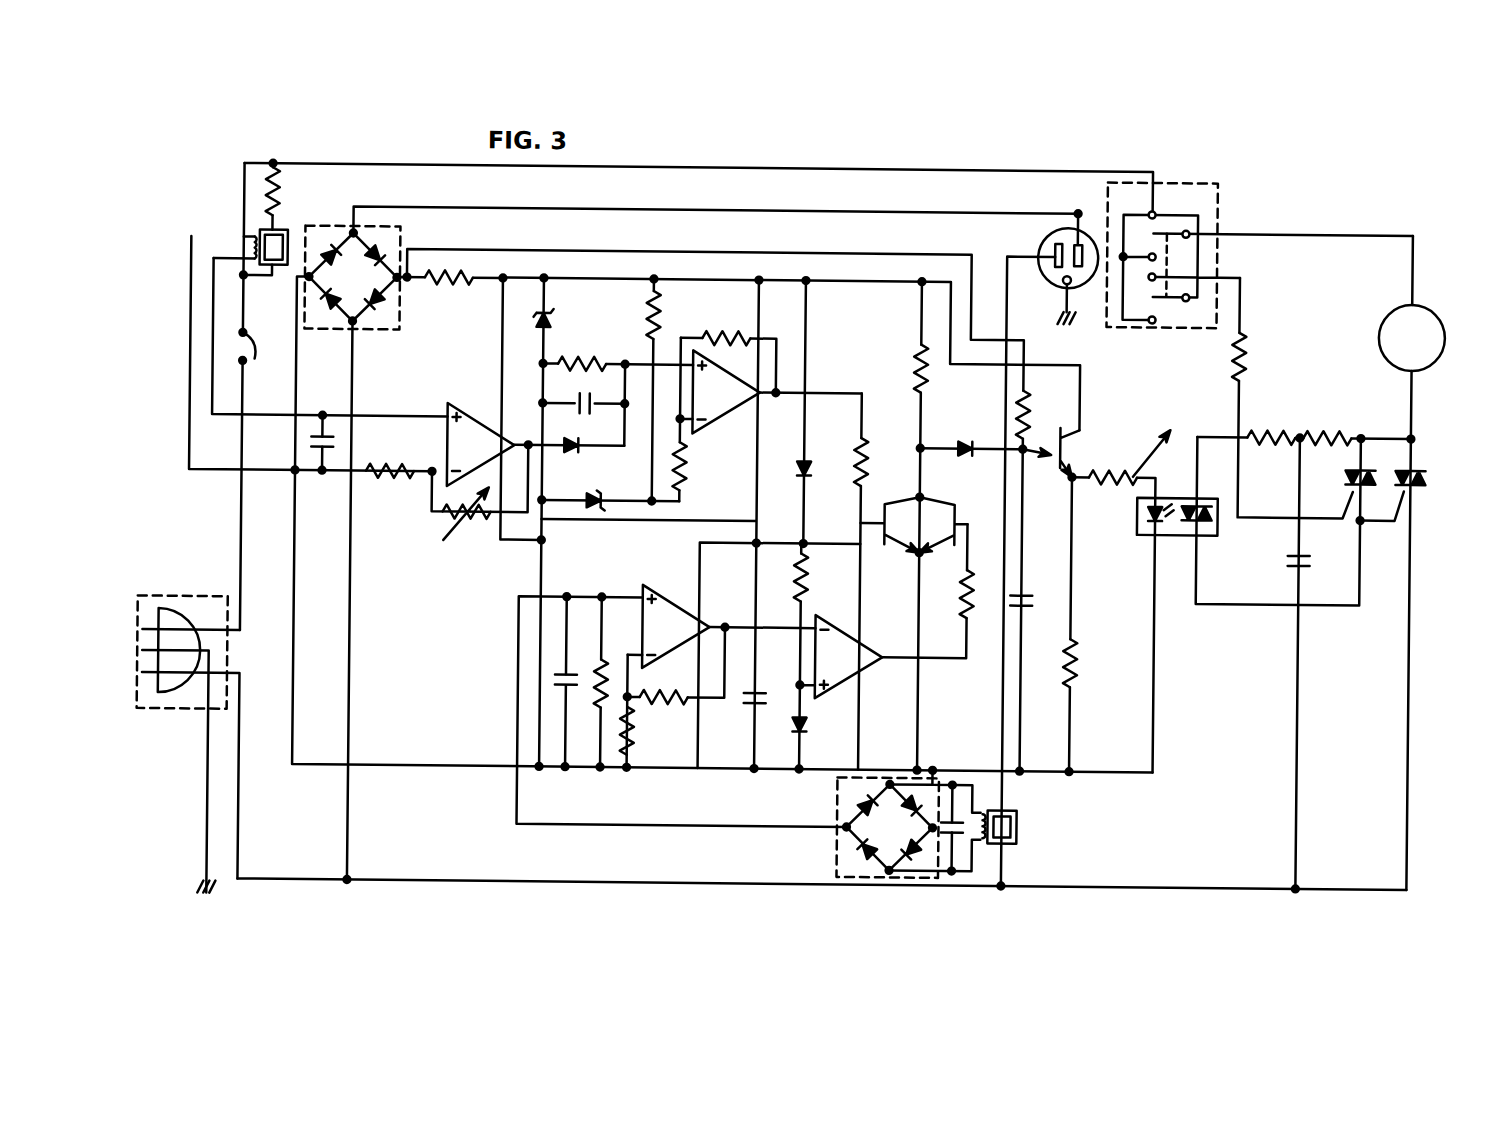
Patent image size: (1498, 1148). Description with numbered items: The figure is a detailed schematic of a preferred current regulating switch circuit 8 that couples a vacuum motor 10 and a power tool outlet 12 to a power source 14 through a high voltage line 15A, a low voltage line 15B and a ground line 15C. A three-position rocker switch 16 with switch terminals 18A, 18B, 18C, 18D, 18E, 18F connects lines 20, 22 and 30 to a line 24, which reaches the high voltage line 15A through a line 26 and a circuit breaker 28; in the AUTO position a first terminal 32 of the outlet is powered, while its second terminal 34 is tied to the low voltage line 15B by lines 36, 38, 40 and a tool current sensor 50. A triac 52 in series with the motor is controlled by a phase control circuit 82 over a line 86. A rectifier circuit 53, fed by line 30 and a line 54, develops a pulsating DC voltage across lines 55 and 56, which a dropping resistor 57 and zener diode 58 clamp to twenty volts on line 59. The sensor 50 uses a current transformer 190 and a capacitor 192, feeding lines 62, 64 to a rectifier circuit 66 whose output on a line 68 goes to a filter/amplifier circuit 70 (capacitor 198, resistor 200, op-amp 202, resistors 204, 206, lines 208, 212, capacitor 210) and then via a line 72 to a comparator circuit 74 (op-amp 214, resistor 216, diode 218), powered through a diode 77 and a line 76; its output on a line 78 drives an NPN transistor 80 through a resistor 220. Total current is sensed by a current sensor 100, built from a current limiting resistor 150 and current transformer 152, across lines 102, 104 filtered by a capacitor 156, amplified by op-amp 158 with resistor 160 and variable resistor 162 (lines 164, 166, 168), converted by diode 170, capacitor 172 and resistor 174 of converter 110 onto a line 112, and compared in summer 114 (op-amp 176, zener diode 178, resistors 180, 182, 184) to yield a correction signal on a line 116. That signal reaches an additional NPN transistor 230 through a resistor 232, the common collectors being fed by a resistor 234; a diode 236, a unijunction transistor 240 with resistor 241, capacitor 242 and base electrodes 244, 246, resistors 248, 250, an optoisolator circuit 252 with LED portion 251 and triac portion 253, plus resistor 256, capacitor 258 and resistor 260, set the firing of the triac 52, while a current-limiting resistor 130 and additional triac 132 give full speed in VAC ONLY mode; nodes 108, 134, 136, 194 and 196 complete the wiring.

The current regulating switch circuit 8 is at (854, 163).
The vacuum motor 10 is at (1377, 325).
The power tool outlet 12 is at (1054, 281).
The power source 14 is at (175, 594).
The high voltage line 15A is at (200, 632).
The low voltage line 15B is at (207, 675).
The ground line 15C is at (213, 655).
The three-position rocker switch 16 is at (1189, 180).
The first switch terminal 18A is at (1146, 208).
The second switch terminal 18B is at (1186, 229).
The third switch terminal 18C is at (1153, 253).
The fourth switch terminal 18D is at (1146, 278).
The fifth switch terminal 18E is at (1185, 298).
The sixth switch terminal 18F is at (1150, 321).
The line 20 is at (1308, 229).
The line 22 is at (1240, 284).
The line 24 is at (716, 168).
The line 26 is at (240, 180).
The circuit breaker 28 is at (252, 356).
The line 30 is at (802, 210).
The first terminal of the power tool outlet 32 is at (1082, 247).
The second terminal of the power tool outlet 34 is at (1048, 244).
The line 36 is at (665, 887).
The line 38 is at (1006, 867).
The line 40 is at (1000, 710).
The tool current sensor 50 is at (1024, 834).
The triac 52 is at (1426, 481).
The rectifier circuit 53 is at (356, 226).
The line 54 is at (352, 584).
The line 55 is at (508, 252).
The line 56 is at (414, 768).
The dropping resistor 57 is at (439, 287).
The zener diode 58 is at (538, 313).
The line 59 is at (575, 280).
The line 62 is at (946, 781).
The line 64 is at (945, 881).
The rectifier circuit 66 is at (833, 805).
The line 68 is at (618, 827).
The filter/amplifier circuit 70 is at (512, 617).
The line 72 is at (727, 626).
The comparator circuit 74 is at (865, 625).
The line 76 is at (806, 497).
The diode 77 is at (795, 471).
The line 78 is at (893, 661).
The NPN transistor 80 is at (959, 512).
The phase control circuit 82 is at (1120, 615).
The line 86 is at (1240, 600).
The current sensor 100 is at (234, 223).
The line 102 is at (188, 285).
The line 104 is at (188, 336).
The line 108 is at (540, 396).
The AC-to-DC converter 110 is at (583, 352).
The line 112 is at (665, 361).
The summer 114 is at (764, 400).
The line 116 is at (830, 391).
The current-limiting resistor 130 is at (1247, 338).
The additional triac 132 is at (1347, 473).
The line 134 is at (1364, 455).
The gate line 136 is at (1363, 523).
The current limiting resistor 150 is at (275, 196).
The current transformer 152 is at (286, 235).
The capacitor 156 is at (323, 419).
The op-amp 158 is at (441, 446).
The resistor 160 is at (393, 482).
The variable resistor 162 is at (452, 534).
The line 164 is at (499, 311).
The line 166 is at (541, 568).
The line 168 is at (544, 563).
The diode 170 is at (573, 456).
The capacitor 172 is at (586, 411).
The resistor 174 is at (600, 360).
The op-amp 176 is at (726, 392).
The zener diode 178 is at (593, 511).
The resistor 180 is at (646, 300).
The resistor 182 is at (687, 471).
The resistor 184 is at (727, 328).
The current transformer 190 is at (1012, 814).
The capacitor 192 is at (975, 872).
The line 194 is at (841, 862).
The line 196 is at (928, 786).
The capacitor 198 is at (564, 680).
The resistor 200 is at (600, 700).
The op-amp 202 is at (722, 627).
The resistor 204 is at (636, 763).
The resistor 206 is at (676, 706).
The line 208 is at (734, 545).
The capacitor 210 is at (751, 697).
The line 212 is at (700, 749).
The op-amp 214 is at (848, 657).
The resistor 216 is at (796, 542).
The diode 218 is at (806, 728).
The resistor 220 is at (967, 596).
The additional NPN transistor 230 is at (884, 511).
The resistor 232 is at (862, 445).
The resistor 234 is at (915, 342).
The diode 236 is at (964, 439).
The unijunction transistor 240 is at (1064, 447).
The resistor 241 is at (1028, 402).
The capacitor 242 is at (1029, 598).
The first base electrode 244 is at (1065, 433).
The second base electrode 246 is at (1066, 481).
The resistor 248 is at (1078, 658).
The resistor 250 is at (1133, 591).
The light-emitting diode portion 251 is at (1136, 517).
The optoisolator circuit 252 is at (1169, 540).
The light-sensitive triac portion 253 is at (1208, 532).
The resistor 256 is at (1275, 430).
The capacitor 258 is at (1303, 567).
The resistor 260 is at (1338, 427).